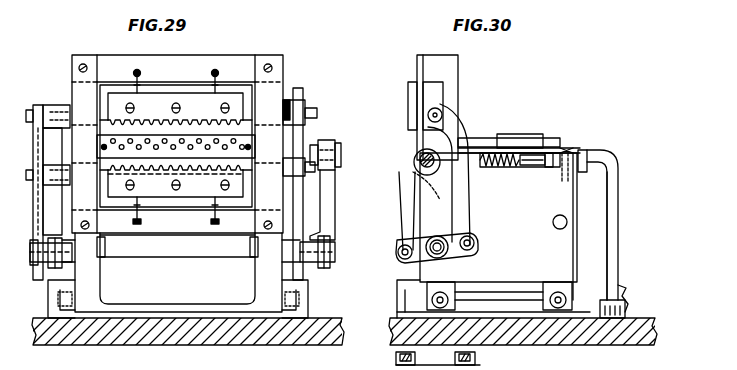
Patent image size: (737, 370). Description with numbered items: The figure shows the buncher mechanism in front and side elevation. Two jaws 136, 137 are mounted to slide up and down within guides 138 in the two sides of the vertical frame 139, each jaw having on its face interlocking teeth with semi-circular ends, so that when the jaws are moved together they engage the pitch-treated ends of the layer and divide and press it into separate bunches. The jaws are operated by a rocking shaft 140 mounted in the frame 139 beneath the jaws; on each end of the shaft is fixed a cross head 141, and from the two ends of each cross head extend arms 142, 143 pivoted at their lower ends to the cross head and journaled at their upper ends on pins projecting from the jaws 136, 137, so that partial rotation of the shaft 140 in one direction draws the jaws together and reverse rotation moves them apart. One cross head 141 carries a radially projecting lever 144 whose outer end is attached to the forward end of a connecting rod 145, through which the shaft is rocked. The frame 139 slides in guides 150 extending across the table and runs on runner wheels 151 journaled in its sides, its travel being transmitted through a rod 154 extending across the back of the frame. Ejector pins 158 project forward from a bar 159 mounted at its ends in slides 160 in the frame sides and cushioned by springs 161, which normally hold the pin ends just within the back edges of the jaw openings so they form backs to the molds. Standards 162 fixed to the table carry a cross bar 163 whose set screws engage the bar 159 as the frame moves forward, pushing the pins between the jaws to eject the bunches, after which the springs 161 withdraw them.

In FIG. 29, the jaw 136 is at (176, 97).
In FIG. 29, the jaw 137 is at (176, 195).
In FIG. 29, the guides 138 is at (184, 134).
In FIG. 29, the vertical frame 139 is at (180, 218).
In FIG. 30, the vertical frame 139 is at (493, 183).
In FIG. 29, the rocking shaft 140 is at (183, 252).
In FIG. 30, the rocking shaft 140 is at (449, 240).
In FIG. 29, the cross head 141 is at (57, 263).
In FIG. 30, the cross head 141 is at (456, 252).
In FIG. 29, the arm 142 is at (40, 146).
In FIG. 30, the arm 142 is at (468, 205).
In FIG. 29, the arm 143 is at (40, 210).
In FIG. 30, the arm 143 is at (430, 200).
In FIG. 29, the lever 144 is at (327, 194).
In FIG. 29, the connecting rod 145 is at (340, 150).
In FIG. 29, the guides 150 is at (58, 301).
In FIG. 30, the guides 150 is at (405, 284).
In FIG. 30, the runner wheels 151 is at (560, 296).
In FIG. 30, the rod 154 is at (567, 220).
In FIG. 30, the ejector pins 158 is at (480, 140).
In FIG. 30, the bar 159 is at (522, 139).
In FIG. 30, the slides 160 is at (586, 153).
In FIG. 30, the springs 161 is at (502, 160).
In FIG. 30, the standards 162 is at (619, 232).
In FIG. 30, the cross bar 163 is at (610, 168).